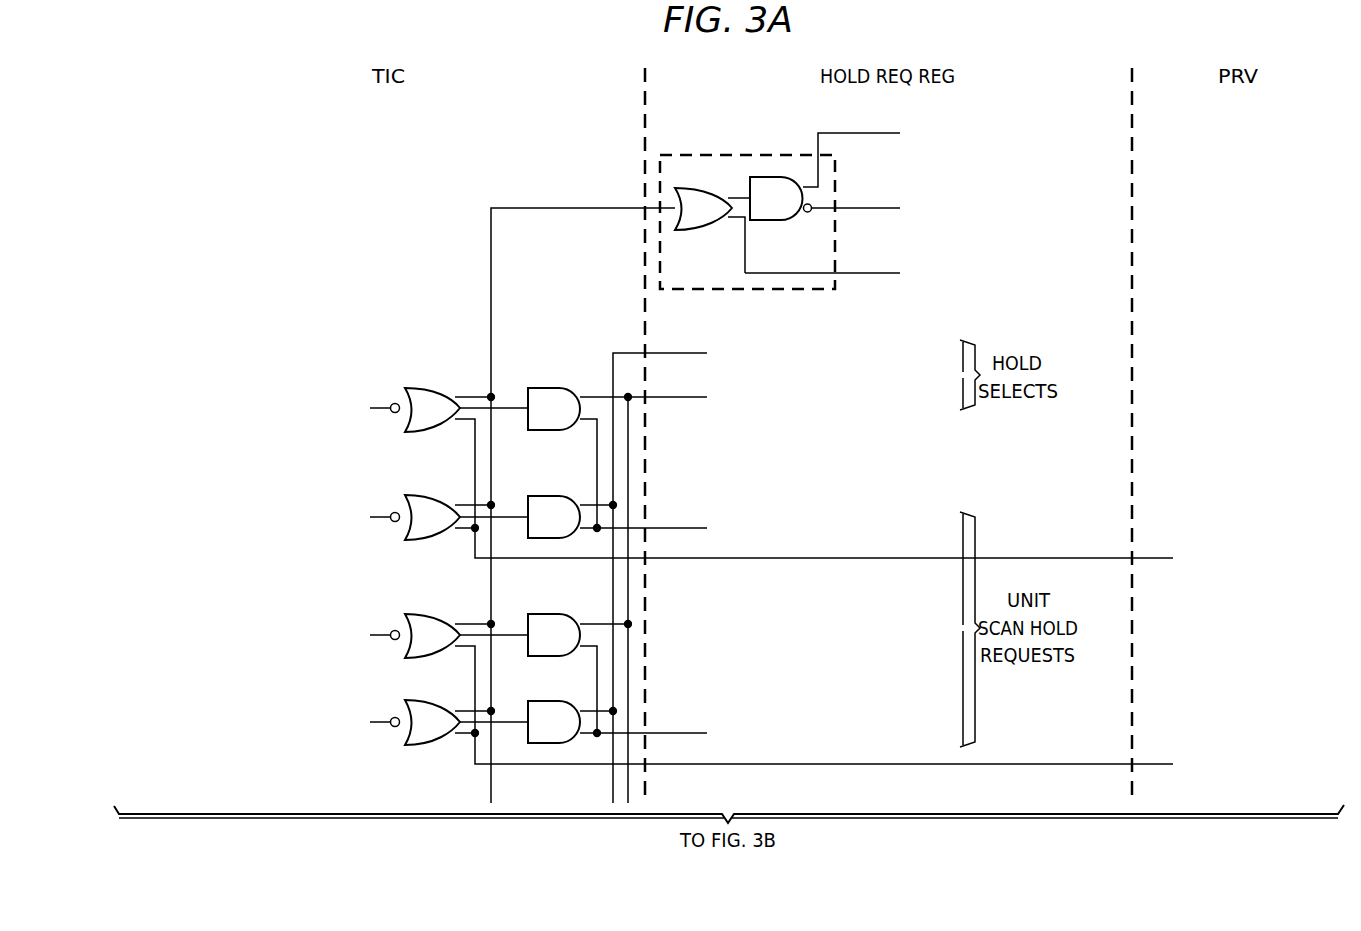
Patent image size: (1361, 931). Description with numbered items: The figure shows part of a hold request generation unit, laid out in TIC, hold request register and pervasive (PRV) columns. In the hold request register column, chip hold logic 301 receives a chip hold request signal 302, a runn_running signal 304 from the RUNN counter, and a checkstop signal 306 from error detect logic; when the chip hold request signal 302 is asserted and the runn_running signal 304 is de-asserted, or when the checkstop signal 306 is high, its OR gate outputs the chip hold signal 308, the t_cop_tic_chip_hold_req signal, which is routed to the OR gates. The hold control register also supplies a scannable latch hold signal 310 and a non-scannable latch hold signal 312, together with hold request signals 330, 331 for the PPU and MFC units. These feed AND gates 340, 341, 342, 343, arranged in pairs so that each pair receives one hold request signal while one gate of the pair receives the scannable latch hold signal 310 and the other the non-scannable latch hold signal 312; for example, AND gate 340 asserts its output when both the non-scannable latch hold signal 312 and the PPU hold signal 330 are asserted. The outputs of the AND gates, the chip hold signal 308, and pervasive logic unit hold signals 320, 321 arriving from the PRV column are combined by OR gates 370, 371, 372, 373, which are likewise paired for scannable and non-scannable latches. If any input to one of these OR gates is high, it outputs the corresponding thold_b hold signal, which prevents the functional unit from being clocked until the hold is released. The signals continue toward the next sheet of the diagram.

The chip hold logic 301 is at (748, 155).
The chip hold request signal 302 is at (857, 134).
The runn_running signal 304 is at (857, 209).
The checkstop signal 306 is at (857, 274).
The chip hold signal 308 is at (560, 208).
The scannable latch hold signal 310 is at (662, 353).
The non-scannable latch hold signal 312 is at (685, 397).
The pervasive logic unit hold signal 320 is at (1152, 557).
The pervasive logic unit hold signal 321 is at (1152, 763).
The hold request signal 330 is at (662, 527).
The hold request signal 331 is at (662, 733).
The AND gate 340 is at (560, 388).
The AND gate 341 is at (560, 495).
The AND gate 342 is at (540, 614).
The AND gate 343 is at (540, 700).
The OR gate 370 is at (420, 388).
The OR gate 371 is at (420, 495).
The OR gate 372 is at (420, 614).
The OR gate 373 is at (420, 700).